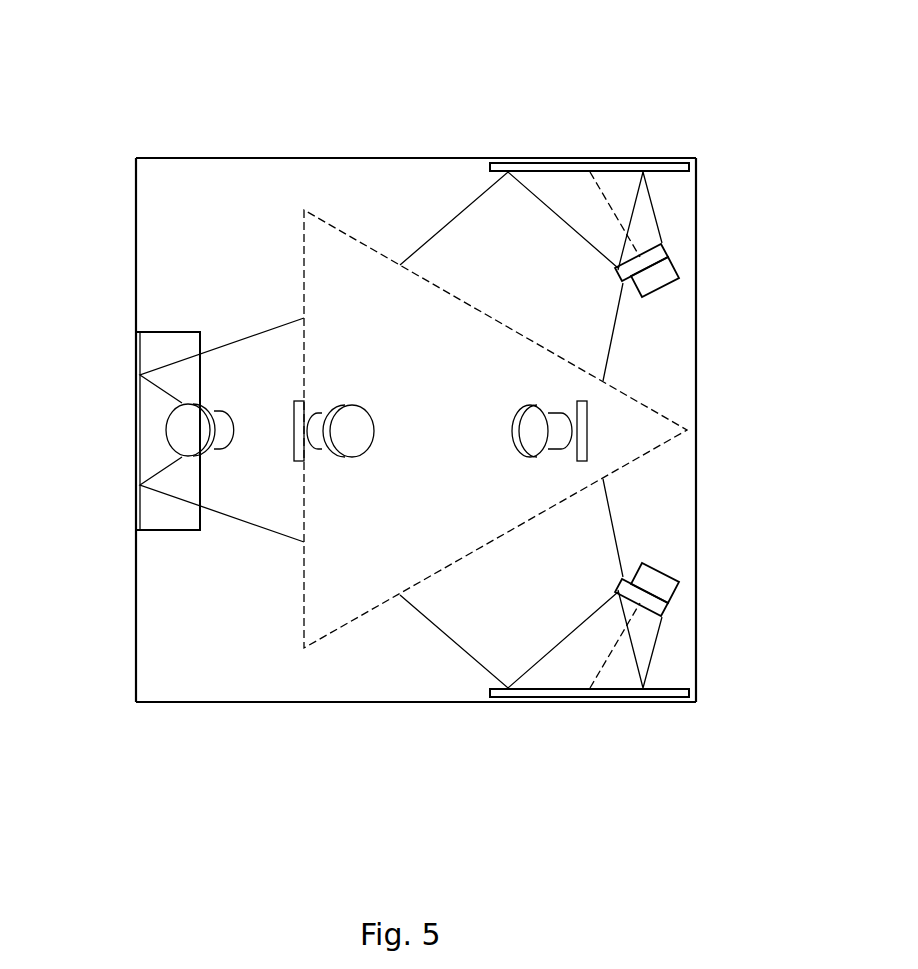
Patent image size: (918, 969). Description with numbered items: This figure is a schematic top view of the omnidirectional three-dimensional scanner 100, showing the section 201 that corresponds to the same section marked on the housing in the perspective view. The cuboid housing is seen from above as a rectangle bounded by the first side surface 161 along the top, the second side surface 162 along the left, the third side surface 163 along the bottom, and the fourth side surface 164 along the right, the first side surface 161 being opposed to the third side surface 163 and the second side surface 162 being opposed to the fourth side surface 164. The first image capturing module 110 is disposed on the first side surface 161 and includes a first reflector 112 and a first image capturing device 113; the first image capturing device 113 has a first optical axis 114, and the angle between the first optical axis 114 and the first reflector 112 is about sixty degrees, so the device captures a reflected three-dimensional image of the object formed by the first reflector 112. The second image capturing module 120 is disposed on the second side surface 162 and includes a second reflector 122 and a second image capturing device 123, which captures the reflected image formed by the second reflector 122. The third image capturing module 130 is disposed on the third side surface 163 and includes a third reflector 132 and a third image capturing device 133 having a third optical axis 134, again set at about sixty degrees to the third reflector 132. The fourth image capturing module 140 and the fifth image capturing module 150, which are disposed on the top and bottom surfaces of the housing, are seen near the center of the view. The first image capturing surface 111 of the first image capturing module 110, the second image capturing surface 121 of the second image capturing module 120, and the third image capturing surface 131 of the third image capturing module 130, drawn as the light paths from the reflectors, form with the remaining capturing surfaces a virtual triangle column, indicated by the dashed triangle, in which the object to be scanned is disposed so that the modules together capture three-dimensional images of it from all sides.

The omnidirectional three-dimensional scanner 100 is at (128, 29).
The first image capturing module 110 is at (747, 175).
The first image capturing surface 111 is at (435, 283).
The first reflector 112 is at (653, 170).
The first image capturing device 113 is at (663, 276).
The first optical axis 114 is at (620, 222).
The second image capturing module 120 is at (80, 325).
The second image capturing surface 121 is at (303, 505).
The second reflector 122 is at (173, 423).
The second image capturing device 123 is at (150, 342).
The third image capturing module 130 is at (747, 568).
The third image capturing surface 131 is at (352, 622).
The third reflector 132 is at (655, 690).
The third image capturing device 133 is at (663, 582).
The third optical axis 134 is at (620, 638).
The fourth image capturing module 140 is at (347, 415).
The fifth image capturing module 150 is at (525, 415).
The first side surface 161 is at (391, 158).
The second side surface 162 is at (136, 633).
The third side surface 163 is at (372, 703).
The fourth side surface 164 is at (696, 385).
The section 201 is at (303, 622).